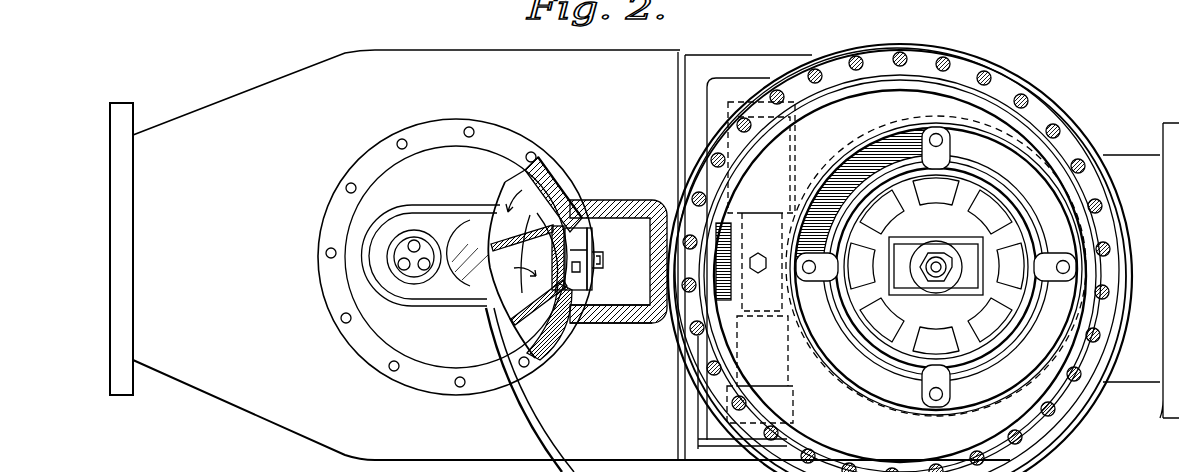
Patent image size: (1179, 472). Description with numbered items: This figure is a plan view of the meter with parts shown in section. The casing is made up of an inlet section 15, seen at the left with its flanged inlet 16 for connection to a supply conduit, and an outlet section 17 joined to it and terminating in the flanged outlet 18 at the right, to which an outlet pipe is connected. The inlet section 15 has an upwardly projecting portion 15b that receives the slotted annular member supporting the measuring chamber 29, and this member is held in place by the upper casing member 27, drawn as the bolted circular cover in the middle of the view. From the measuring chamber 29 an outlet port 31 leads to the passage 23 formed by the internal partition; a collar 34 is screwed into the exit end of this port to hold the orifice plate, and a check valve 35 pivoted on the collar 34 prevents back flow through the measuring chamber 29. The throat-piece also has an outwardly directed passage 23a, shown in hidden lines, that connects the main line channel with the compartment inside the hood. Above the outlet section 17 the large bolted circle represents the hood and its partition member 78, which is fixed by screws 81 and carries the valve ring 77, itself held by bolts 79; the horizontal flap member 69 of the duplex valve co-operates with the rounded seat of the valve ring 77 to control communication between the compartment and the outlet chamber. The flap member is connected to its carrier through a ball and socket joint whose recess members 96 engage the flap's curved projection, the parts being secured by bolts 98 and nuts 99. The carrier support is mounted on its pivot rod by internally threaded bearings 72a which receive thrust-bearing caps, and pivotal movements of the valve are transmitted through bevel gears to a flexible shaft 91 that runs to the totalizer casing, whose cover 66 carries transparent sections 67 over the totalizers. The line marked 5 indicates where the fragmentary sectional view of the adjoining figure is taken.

The section line 5— 5 is at (937, 65).
The inlet section 15 is at (232, 408).
The upwardly projecting portion 15b is at (560, 184).
The flanged inlet 16 is at (115, 395).
The outlet section 17 is at (1126, 158).
The flanged outlet 18 is at (1166, 124).
The passage 23 is at (613, 293).
The outwardly directed passage 23a is at (738, 222).
The upper casing member 27 is at (348, 288).
The measuring chamber 29 is at (550, 342).
The outlet port 31 is at (568, 222).
The collar 34 is at (620, 212).
The check valve 35 is at (606, 282).
The cover 66 is at (450, 205).
The transparent sections 67 is at (480, 252).
The horizontal flap member 69 is at (908, 306).
The bearings of the support 72a is at (901, 263).
The valve ring 77 is at (898, 369).
The partition member 78 is at (1052, 338).
The bolts 79 is at (934, 396).
The screws 81 is at (1080, 160).
The flexible shaft 91 is at (548, 448).
The recess members 96 is at (912, 285).
The bolts 98 is at (935, 256).
The nuts 99 is at (946, 258).